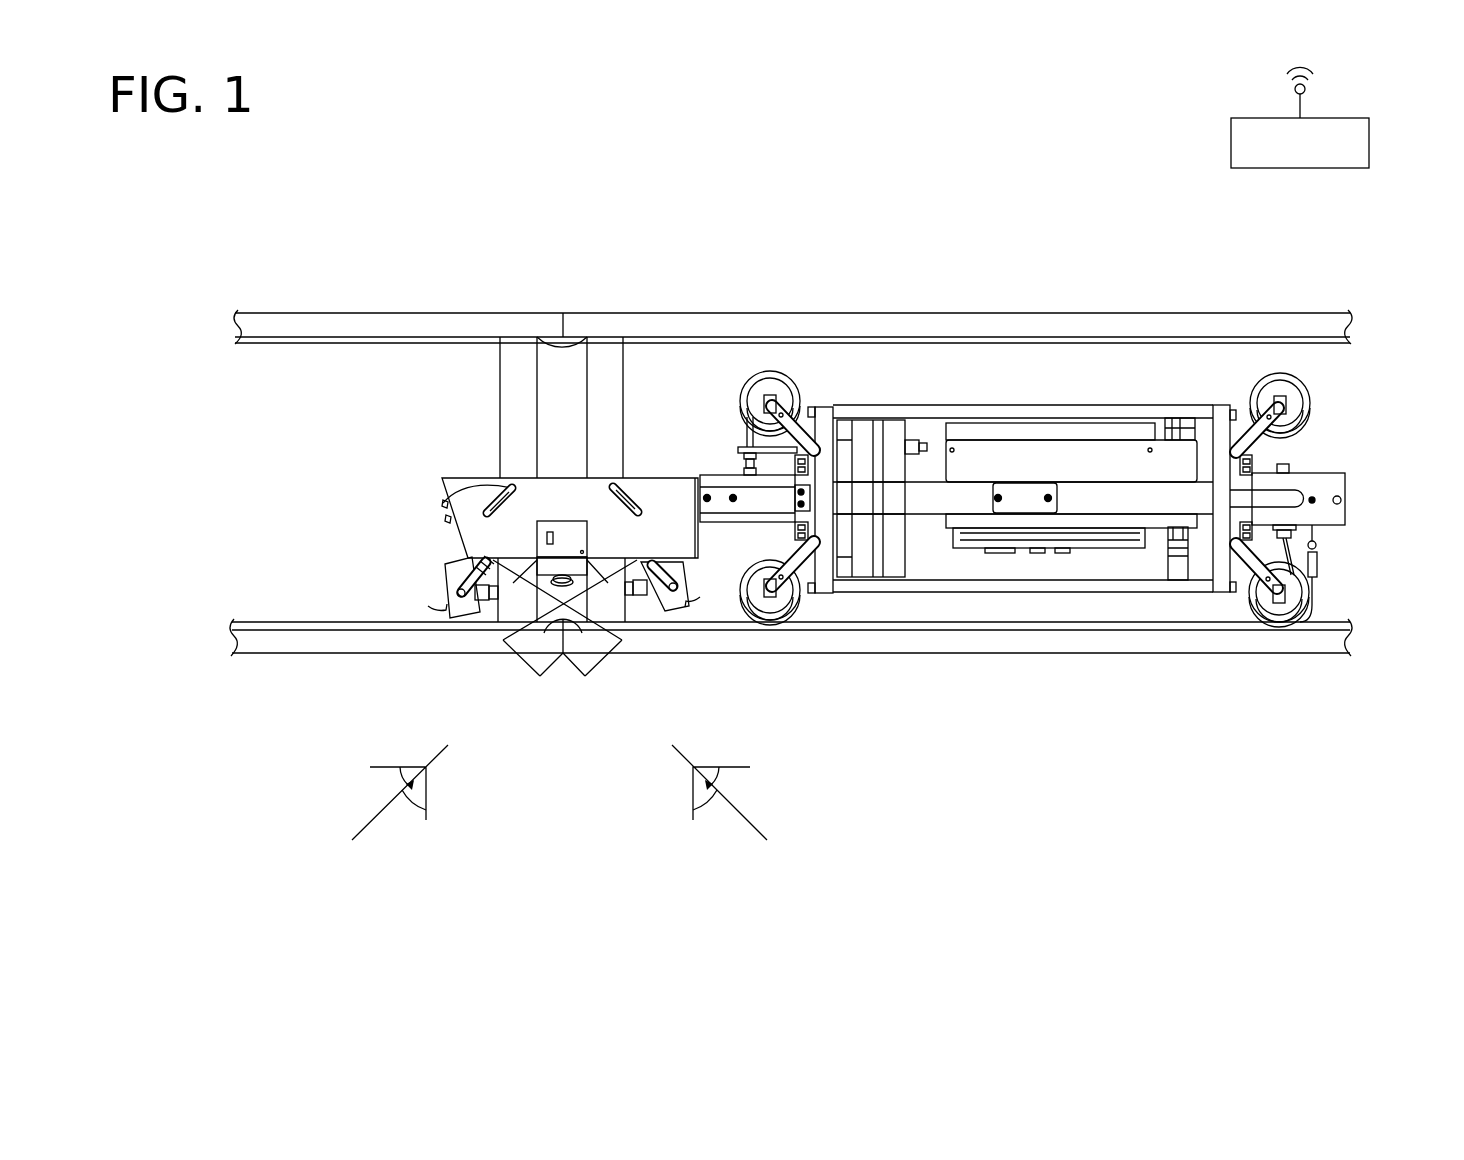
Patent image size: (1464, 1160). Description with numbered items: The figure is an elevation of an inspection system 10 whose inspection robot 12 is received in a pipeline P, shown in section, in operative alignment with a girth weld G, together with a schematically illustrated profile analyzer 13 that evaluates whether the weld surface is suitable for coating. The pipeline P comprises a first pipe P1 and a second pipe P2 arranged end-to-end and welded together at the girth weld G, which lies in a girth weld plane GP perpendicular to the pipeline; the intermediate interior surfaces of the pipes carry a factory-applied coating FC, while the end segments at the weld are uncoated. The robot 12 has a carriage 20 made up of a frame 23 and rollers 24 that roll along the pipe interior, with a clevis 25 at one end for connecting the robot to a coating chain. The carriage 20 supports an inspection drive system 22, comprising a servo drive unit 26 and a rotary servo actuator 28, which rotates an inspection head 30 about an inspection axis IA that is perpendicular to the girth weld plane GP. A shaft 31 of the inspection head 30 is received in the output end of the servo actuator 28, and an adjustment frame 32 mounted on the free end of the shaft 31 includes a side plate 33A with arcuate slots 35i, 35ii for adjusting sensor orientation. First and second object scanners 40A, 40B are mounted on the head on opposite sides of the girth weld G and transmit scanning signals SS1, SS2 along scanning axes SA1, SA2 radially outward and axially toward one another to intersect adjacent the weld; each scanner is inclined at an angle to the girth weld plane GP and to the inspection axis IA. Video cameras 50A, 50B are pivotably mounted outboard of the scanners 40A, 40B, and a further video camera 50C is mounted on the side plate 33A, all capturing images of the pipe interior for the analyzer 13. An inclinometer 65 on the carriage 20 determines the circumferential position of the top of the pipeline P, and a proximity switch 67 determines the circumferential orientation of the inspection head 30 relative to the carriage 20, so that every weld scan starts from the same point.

The inspection system 10 is at (1225, 772).
The inspection robot 12 is at (661, 352).
The profile analyzer 13 is at (1333, 168).
The carriage 20 is at (1197, 403).
The inspection drive system 22 is at (1020, 440).
The frame 23 is at (1035, 585).
The rollers 24 is at (775, 404).
The clevis 25 is at (1338, 475).
The servo drive unit 26 is at (1095, 432).
The rotary servo actuator 28 is at (893, 555).
The inspection head 30 is at (521, 475).
The shaft 31 is at (720, 520).
The adjustment frame 32 is at (663, 478).
The first side plate 33A is at (691, 551).
The slot 35i is at (624, 512).
The slot 35ii is at (455, 503).
The first object scanner 40A is at (650, 595).
The second object scanner 40B is at (473, 567).
The first video camera 50A is at (665, 610).
The second video camera 50B is at (455, 607).
The third video camera 50C is at (563, 532).
The inclinometer 65 is at (1178, 565).
The proximity switch 67 is at (745, 429).
The pipeline P is at (1307, 655).
The first pipe P1 is at (1158, 313).
The second pipe P2 is at (311, 642).
The factory-applied coating FC is at (795, 335).
The girth weld G is at (585, 372).
The girth weld plane GP is at (563, 197).
The inspection axis IA is at (350, 498).
The first scanning axis SA1 is at (888, 300).
The second scanning axis SA2 is at (232, 298).
The first scanning signal SS1 is at (533, 676).
The second scanning signal SS2 is at (583, 665).